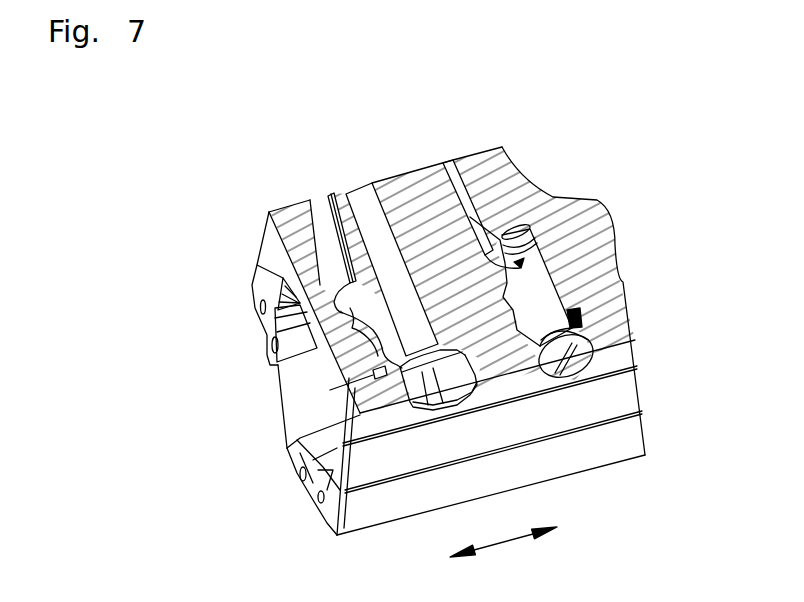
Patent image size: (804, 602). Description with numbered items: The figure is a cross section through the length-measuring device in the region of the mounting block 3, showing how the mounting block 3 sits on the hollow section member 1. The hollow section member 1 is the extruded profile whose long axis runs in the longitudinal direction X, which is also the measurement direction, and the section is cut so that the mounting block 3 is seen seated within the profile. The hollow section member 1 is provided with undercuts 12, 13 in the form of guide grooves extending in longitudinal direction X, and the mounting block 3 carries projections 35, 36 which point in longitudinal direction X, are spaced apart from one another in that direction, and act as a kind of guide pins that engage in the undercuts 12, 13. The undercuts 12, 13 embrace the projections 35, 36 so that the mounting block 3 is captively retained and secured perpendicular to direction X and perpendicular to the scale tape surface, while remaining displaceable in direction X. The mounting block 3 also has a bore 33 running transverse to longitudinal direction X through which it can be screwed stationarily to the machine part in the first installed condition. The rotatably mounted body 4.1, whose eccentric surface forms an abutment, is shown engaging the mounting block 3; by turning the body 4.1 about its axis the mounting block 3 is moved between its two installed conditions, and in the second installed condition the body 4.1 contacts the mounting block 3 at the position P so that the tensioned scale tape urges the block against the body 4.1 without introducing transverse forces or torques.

The hollow section member 1 is at (267, 277).
The mounting block 3 is at (393, 187).
The body 4.1 is at (548, 273).
The undercut 12 is at (337, 298).
The undercut 13 is at (513, 268).
The bore 33 is at (342, 197).
The projection 35 is at (357, 313).
The projection 36 is at (445, 163).
The position P is at (540, 250).
The longitudinal direction X is at (503, 552).